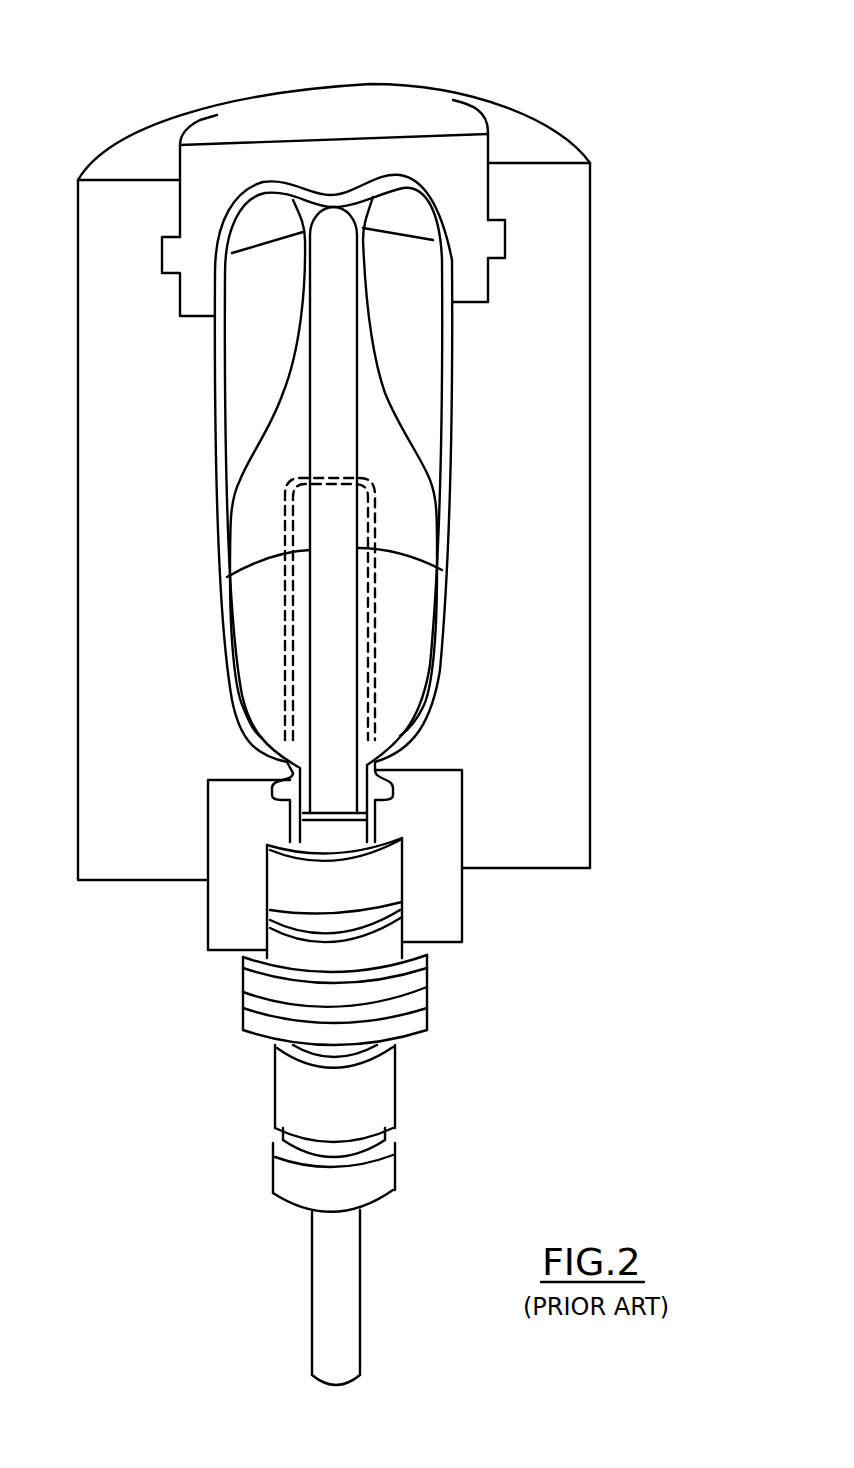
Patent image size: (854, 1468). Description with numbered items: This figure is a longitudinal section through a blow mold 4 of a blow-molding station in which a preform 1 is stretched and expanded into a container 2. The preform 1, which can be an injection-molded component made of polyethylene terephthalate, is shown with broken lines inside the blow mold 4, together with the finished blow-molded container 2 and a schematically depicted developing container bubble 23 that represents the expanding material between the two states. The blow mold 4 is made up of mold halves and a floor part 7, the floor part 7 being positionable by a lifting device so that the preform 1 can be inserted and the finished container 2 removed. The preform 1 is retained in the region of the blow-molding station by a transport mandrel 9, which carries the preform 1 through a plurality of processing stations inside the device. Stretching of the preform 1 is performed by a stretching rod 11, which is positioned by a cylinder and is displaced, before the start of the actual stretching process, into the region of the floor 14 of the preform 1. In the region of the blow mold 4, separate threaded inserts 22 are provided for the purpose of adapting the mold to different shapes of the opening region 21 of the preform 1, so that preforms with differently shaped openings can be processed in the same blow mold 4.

The preform 1 is at (375, 653).
The container 2 is at (447, 415).
The blow mold 4 is at (545, 485).
The floor part 7 is at (420, 100).
The transport mandrel 9 is at (413, 1003).
The stretching rod 11 is at (312, 1313).
The floor 14 is at (367, 483).
The opening region 21 is at (375, 802).
The threaded inserts 22 is at (445, 898).
The developing container bubble 23 is at (390, 372).